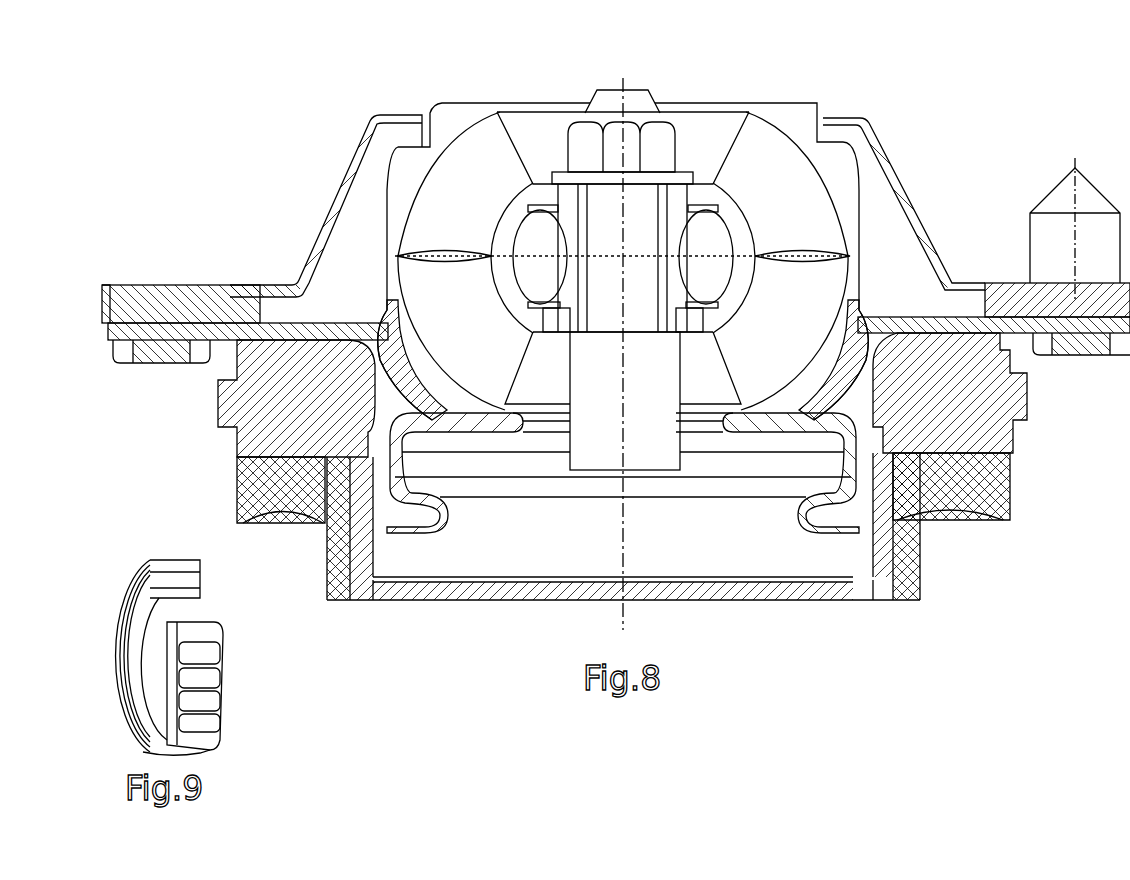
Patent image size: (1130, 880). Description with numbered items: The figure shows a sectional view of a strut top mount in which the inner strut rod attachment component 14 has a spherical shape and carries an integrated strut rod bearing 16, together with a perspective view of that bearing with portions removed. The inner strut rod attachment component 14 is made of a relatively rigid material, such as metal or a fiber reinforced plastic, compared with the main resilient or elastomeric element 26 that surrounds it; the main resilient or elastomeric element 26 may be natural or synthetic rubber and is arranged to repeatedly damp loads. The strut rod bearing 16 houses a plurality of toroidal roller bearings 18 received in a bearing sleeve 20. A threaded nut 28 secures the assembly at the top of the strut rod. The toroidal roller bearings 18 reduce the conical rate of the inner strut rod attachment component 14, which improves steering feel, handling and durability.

In FIG. 8, the inner strut rod attachment component 14 is at (497, 240).
In FIG. 8, the strut rod bearing 16 is at (548, 190).
In FIG. 9, the strut rod bearing 16 is at (178, 640).
In FIG. 8, the toroidal roller bearings 18 is at (512, 243).
In FIG. 9, the toroidal roller bearings 18 is at (210, 700).
In FIG. 9, the bearing sleeve 20 is at (148, 560).
In FIG. 8, the main resilient or elastomeric element 26 is at (779, 120).
In FIG. 8, the nut 28 is at (637, 87).